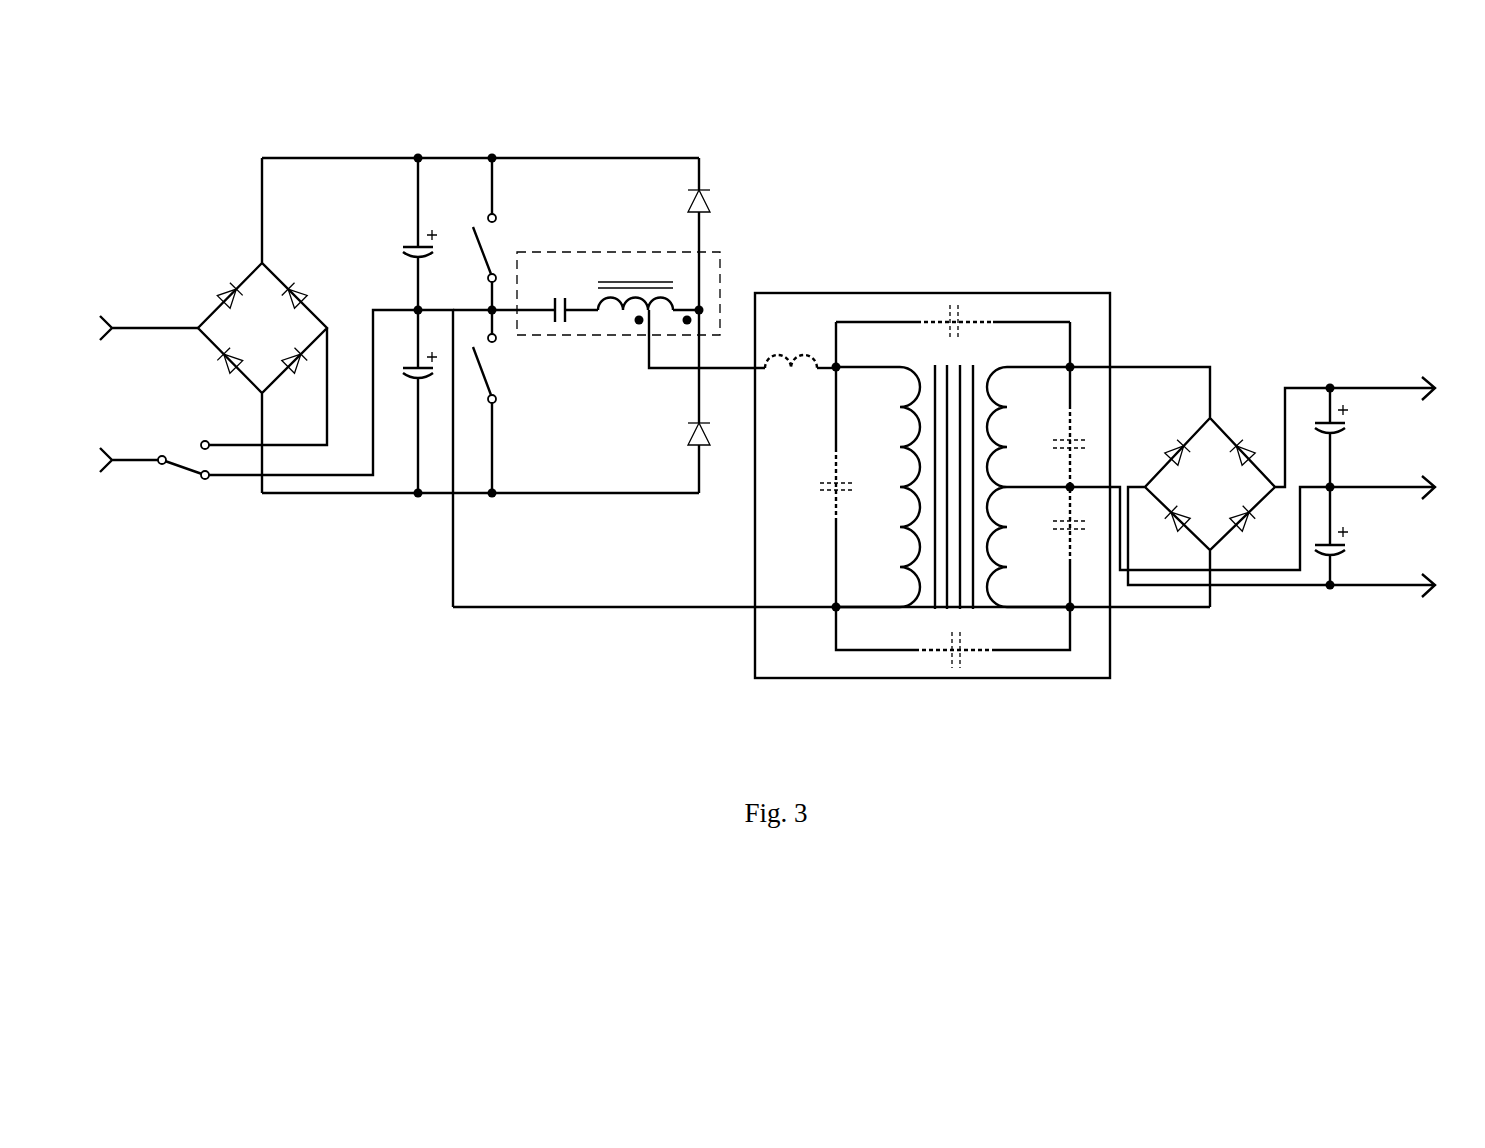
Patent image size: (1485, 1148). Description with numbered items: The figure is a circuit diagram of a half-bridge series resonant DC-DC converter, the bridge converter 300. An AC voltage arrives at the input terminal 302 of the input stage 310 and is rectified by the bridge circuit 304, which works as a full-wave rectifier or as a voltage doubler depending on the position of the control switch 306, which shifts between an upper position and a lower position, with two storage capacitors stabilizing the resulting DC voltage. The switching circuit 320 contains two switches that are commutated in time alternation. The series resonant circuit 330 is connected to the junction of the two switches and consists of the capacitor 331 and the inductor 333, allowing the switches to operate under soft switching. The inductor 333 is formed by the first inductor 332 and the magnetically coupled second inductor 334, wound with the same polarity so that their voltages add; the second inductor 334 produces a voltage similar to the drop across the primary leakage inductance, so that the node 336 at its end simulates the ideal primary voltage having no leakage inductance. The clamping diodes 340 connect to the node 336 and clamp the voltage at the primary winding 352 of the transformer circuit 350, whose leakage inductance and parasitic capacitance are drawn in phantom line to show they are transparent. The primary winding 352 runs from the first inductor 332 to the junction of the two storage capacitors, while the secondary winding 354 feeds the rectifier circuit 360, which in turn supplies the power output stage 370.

The bridge converter 300 is at (515, 795).
The input terminal 302 is at (112, 320).
The bridge circuit 304 is at (237, 250).
The control switch 306 is at (112, 468).
The input stage 310 is at (418, 145).
The switching circuit 320 is at (473, 193).
The series resonant circuit 330 is at (593, 228).
The capacitor 331 is at (555, 255).
The first inductor 332 is at (617, 338).
The inductor 333 is at (648, 280).
The second inductor 334 is at (665, 362).
The node 336 is at (704, 306).
The clamping diodes 340 is at (722, 198).
The transformer circuit 350 is at (1018, 292).
The primary winding 352 is at (780, 623).
The secondary winding 354 is at (1085, 575).
The rectifier circuit 360 is at (1230, 435).
The power output stage 370 is at (1452, 367).